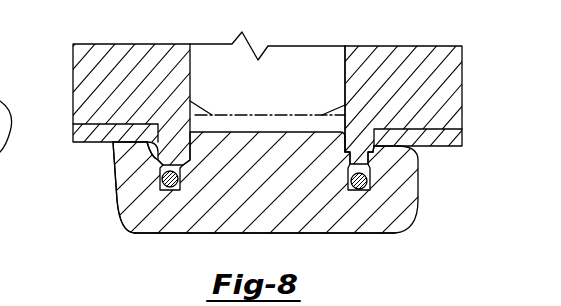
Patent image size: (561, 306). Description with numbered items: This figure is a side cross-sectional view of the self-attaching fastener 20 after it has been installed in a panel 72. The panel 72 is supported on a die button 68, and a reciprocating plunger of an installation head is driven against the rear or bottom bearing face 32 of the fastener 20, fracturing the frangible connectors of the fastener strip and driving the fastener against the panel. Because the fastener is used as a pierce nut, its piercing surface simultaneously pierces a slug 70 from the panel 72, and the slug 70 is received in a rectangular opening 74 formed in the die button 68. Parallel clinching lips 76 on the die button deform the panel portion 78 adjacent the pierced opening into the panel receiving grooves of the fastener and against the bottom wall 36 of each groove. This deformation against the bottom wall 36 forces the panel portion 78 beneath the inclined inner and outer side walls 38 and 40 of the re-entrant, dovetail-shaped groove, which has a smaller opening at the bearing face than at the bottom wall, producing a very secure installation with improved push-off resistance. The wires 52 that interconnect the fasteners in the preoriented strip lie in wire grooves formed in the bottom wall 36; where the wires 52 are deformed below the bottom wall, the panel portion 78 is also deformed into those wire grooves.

The self-attaching fastener 20 is at (372, 228).
The bottom bearing face 32 is at (177, 236).
The bottom wall 36 is at (382, 149).
The inclined side wall 38 is at (152, 146).
The inclined side wall 40 is at (347, 163).
The wires 52 is at (126, 222).
The die button 68 is at (395, 66).
The slug 70 is at (265, 104).
The panel 72 is at (437, 142).
The rectangular opening 74 is at (345, 80).
The clinching lips 76 is at (183, 143).
The panel portion 78 is at (153, 160).